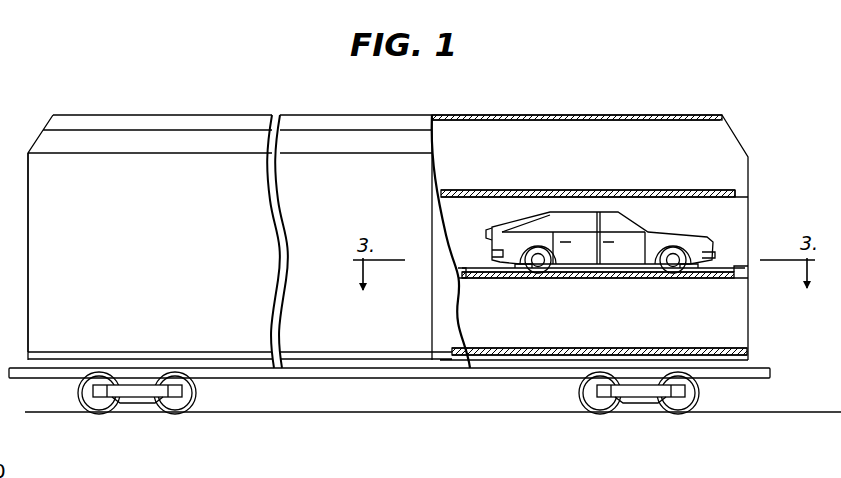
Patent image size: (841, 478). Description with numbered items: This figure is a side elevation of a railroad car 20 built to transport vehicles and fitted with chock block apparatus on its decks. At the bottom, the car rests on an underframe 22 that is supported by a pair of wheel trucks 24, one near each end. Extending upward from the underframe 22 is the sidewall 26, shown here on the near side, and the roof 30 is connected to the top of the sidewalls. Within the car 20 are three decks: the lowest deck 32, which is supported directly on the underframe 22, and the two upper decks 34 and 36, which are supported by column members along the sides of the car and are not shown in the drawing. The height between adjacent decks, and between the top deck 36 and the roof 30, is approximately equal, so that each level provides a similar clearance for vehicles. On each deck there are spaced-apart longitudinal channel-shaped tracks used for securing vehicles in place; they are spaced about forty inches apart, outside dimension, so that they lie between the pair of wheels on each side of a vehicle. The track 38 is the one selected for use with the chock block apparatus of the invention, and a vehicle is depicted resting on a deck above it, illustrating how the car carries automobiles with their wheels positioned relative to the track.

The railroad car 20 is at (146, 108).
The underframe 22 is at (427, 379).
The wheel trucks 24 is at (146, 407).
The sidewall 26 is at (160, 220).
The roof 30 is at (488, 114).
The deck 32 is at (538, 349).
The deck 34 is at (741, 274).
The deck 36 is at (681, 193).
The track 38 is at (470, 268).